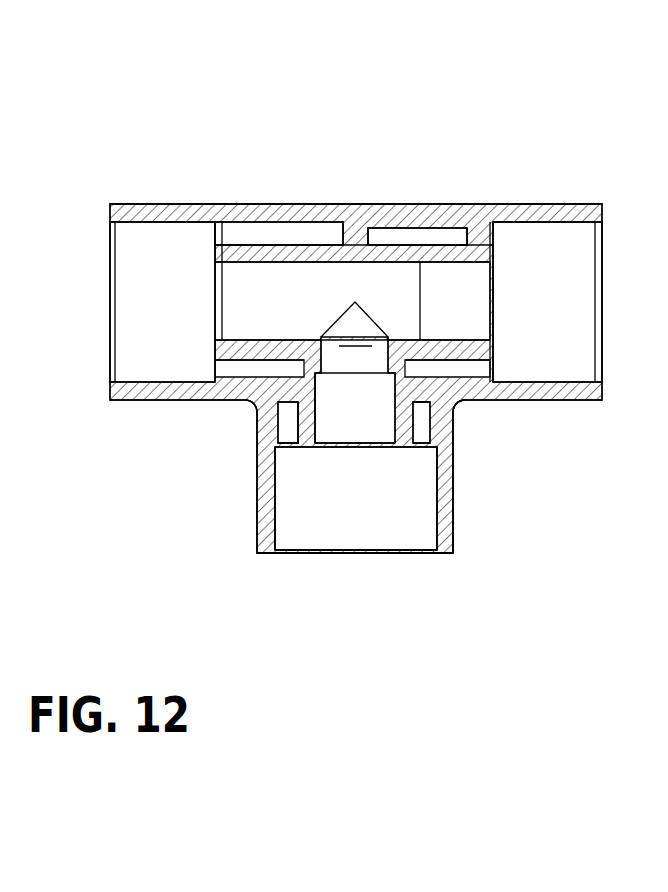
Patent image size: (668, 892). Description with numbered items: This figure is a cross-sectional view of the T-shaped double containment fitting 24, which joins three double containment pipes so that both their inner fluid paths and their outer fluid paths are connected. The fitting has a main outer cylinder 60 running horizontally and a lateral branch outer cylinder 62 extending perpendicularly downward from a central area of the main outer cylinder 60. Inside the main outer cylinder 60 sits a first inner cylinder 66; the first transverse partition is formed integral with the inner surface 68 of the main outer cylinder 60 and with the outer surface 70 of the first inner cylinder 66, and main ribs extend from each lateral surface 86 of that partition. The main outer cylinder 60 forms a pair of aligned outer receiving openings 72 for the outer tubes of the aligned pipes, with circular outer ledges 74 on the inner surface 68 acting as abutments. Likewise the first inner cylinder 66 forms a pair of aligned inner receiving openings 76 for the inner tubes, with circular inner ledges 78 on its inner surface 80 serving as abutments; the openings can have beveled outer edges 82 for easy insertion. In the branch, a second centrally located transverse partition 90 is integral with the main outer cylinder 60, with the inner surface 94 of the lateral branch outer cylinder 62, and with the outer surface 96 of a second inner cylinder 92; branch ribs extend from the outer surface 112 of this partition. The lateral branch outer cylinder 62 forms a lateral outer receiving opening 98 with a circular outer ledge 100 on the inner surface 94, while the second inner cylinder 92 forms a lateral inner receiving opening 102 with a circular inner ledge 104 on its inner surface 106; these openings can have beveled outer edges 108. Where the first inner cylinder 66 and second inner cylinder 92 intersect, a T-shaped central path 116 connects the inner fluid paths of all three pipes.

The T-shaped double containment fitting 24 is at (443, 142).
The main outer cylinder 60 is at (154, 195).
The lateral branch outer cylinder 62 is at (249, 464).
The first inner cylinder 66 is at (237, 234).
The inner surface of the main outer cylinder 68 is at (407, 228).
The outer surface of the first inner cylinder 70 is at (467, 248).
The outer receiving openings 72 is at (132, 285).
The circular outer ledges 74 is at (215, 226).
The inner receiving openings 76 is at (214, 313).
The circular inner ledges 78 is at (273, 250).
The inner surface of the first inner cylinder 80 is at (215, 272).
The beveled outer edges 82 is at (602, 220).
The lateral surface of the first centrally located transverse partition 86 is at (343, 237).
The second centrally located transverse partition 90 is at (290, 420).
The second inner cylinder 92 is at (415, 432).
The inner surface of the lateral branch outer cylinder 94 is at (430, 548).
The outer surface of the second inner cylinder 96 is at (297, 427).
The lateral outer receiving opening 98 is at (333, 530).
The circular outer ledge 100 is at (277, 452).
The lateral inner receiving opening 102 is at (368, 422).
The circular inner ledge 104 is at (320, 375).
The inner surface of the second inner cylinder 106 is at (320, 432).
The beveled outer edges 108 is at (277, 553).
The outer surface of the second centrally located transverse partition 112 is at (420, 405).
The T-shaped central path 116 is at (354, 325).